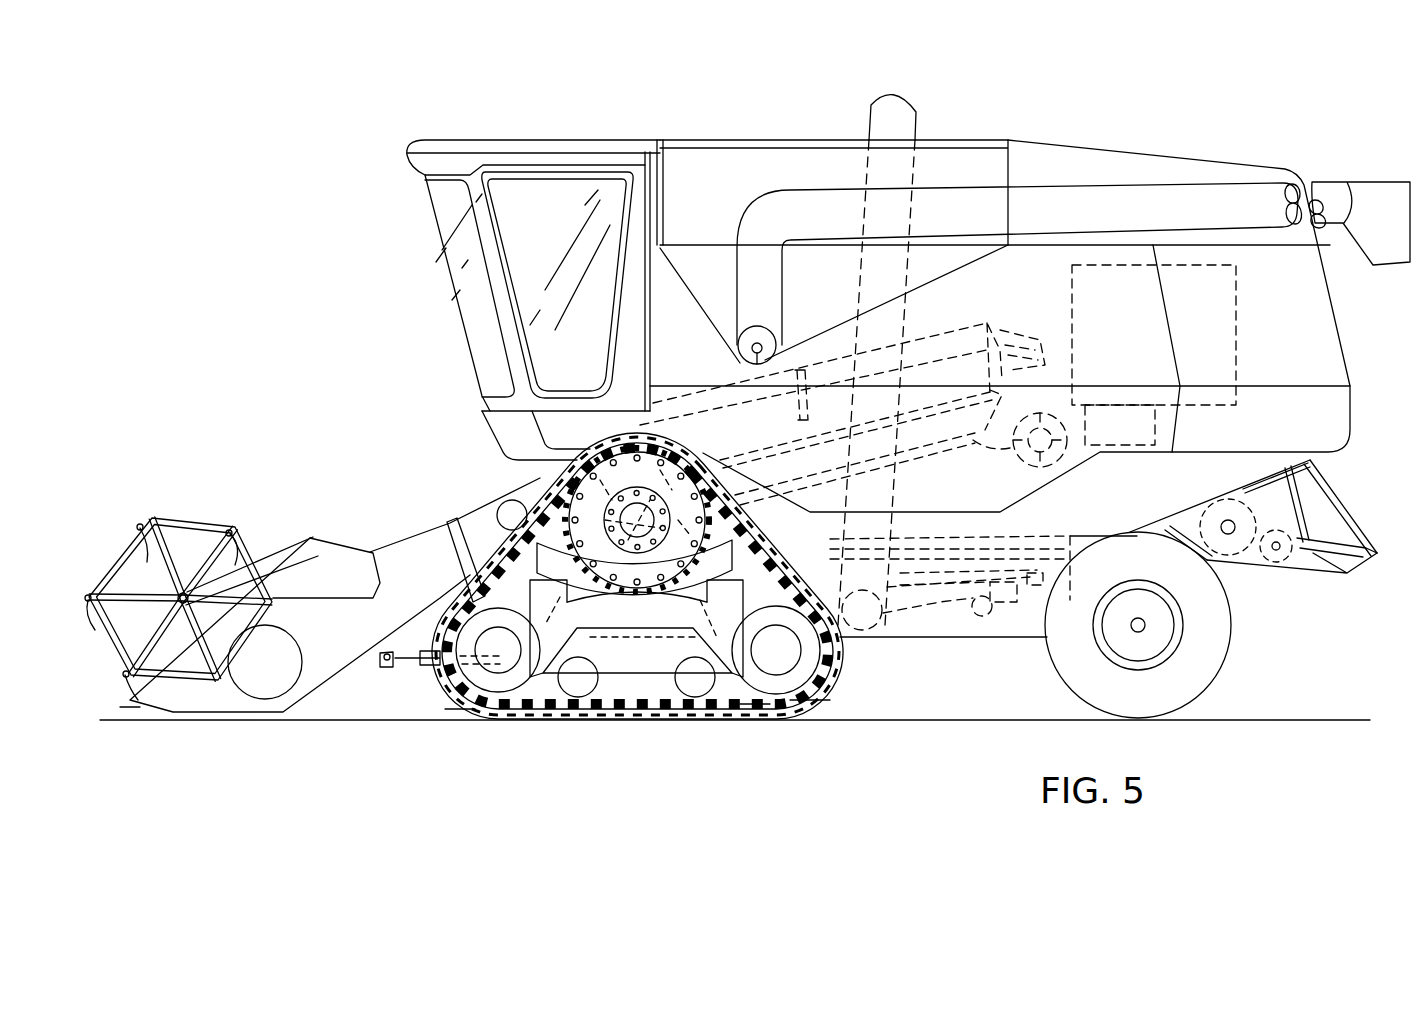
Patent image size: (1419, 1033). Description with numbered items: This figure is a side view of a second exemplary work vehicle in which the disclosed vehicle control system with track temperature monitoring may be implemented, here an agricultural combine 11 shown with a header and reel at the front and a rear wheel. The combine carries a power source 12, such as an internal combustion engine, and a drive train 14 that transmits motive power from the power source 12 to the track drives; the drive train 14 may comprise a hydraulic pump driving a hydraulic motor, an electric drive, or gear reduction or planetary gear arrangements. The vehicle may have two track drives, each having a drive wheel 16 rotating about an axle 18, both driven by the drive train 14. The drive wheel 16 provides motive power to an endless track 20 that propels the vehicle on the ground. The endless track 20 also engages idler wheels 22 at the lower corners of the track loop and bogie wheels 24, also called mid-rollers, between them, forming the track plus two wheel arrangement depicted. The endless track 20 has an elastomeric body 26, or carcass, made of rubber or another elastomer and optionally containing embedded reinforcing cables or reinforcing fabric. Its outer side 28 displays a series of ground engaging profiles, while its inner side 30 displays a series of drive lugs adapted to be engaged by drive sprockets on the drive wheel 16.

The combine harvester 11 is at (222, 129).
The power source 12 is at (1237, 352).
The drive train 14 is at (1157, 420).
The drive wheel 16 is at (548, 510).
The axle 18 is at (563, 468).
The endless track 20 is at (766, 529).
The idler wheels 22 is at (448, 609).
The bogie wheels 24 is at (583, 680).
The elastomeric body 26 is at (807, 700).
The outer side 28 is at (458, 707).
The inner side 30 is at (757, 710).